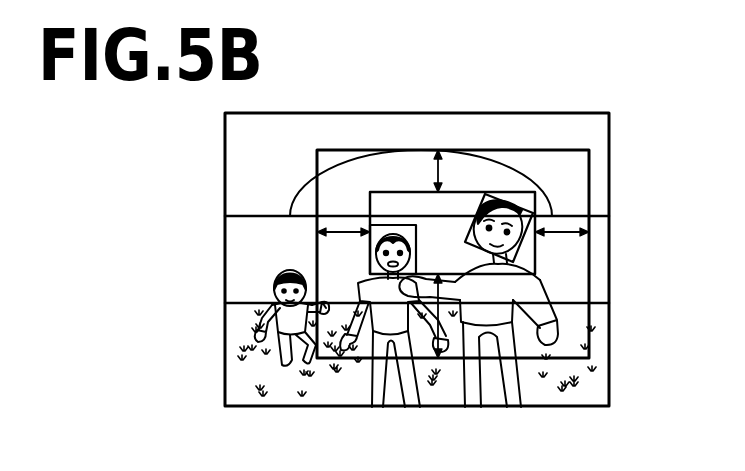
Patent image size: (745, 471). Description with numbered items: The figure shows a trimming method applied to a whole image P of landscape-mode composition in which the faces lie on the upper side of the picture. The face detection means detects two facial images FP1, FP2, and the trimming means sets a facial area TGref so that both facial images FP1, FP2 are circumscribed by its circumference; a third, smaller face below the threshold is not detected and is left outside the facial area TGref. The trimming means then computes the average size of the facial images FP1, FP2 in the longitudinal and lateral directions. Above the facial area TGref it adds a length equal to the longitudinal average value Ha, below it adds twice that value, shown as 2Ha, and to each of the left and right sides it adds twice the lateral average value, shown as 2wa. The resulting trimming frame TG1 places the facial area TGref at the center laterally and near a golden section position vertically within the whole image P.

The whole image P is at (588, 112).
The trimming frame TG1 is at (567, 150).
The facial area TGref is at (428, 192).
The facial image FP1 is at (520, 253).
The facial image FP2 is at (371, 225).
The average value of facial images in the longitudinal direction Ha is at (462, 150).
The twice the average longitudinal value 2Ha is at (438, 358).
The twice the average lateral value 2wa is at (343, 234).